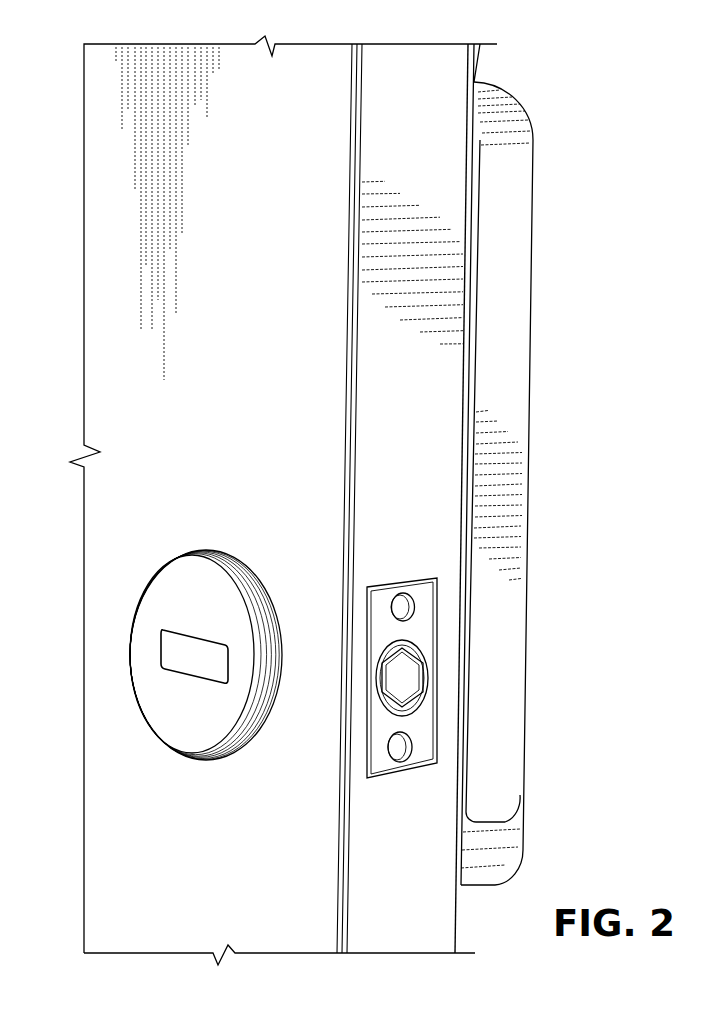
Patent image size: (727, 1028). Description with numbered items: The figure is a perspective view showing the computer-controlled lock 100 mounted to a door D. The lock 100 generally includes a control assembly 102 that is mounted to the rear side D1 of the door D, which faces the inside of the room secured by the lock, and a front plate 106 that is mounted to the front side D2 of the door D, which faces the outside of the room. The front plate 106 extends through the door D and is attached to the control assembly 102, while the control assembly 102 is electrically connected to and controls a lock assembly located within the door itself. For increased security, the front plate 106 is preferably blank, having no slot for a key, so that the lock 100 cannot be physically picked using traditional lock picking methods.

The lock 100 is at (565, 104).
The control assembly 102 is at (555, 607).
The front plate 106 is at (177, 700).
The door D is at (40, 86).
The rear side D1 is at (455, 907).
The front side D2 is at (330, 913).